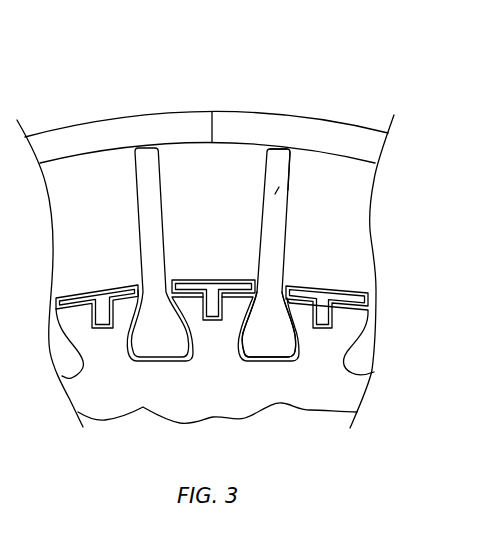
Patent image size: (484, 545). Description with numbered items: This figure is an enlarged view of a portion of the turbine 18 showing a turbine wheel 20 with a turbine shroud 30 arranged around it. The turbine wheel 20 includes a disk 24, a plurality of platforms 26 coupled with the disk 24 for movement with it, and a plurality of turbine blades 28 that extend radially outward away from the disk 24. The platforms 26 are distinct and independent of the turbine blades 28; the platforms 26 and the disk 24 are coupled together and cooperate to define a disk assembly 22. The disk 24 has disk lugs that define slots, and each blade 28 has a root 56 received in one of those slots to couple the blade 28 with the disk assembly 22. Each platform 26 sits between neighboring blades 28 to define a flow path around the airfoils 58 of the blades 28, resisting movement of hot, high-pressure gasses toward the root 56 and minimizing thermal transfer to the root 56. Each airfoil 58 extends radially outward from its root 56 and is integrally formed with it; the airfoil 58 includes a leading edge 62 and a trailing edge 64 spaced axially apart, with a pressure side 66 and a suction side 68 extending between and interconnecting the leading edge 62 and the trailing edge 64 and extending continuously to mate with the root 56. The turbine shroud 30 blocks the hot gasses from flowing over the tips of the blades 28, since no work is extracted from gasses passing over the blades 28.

The turbine 18 is at (229, 80).
The turbine wheel 20 is at (83, 182).
The disk assembly 22 is at (48, 347).
The disk 24 is at (213, 333).
The platforms 26 is at (213, 280).
The turbine blades 28 is at (312, 153).
The turbine shroud 30 is at (144, 102).
The root 56 is at (270, 345).
The airfoil 58 is at (274, 223).
The leading edge 62 is at (275, 277).
The trailing edge 64 is at (292, 180).
The pressure side 66 is at (163, 190).
The suction side 68 is at (140, 242).